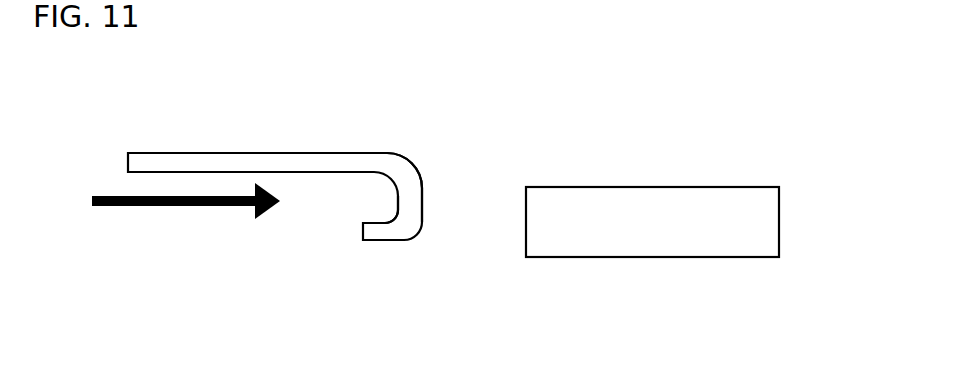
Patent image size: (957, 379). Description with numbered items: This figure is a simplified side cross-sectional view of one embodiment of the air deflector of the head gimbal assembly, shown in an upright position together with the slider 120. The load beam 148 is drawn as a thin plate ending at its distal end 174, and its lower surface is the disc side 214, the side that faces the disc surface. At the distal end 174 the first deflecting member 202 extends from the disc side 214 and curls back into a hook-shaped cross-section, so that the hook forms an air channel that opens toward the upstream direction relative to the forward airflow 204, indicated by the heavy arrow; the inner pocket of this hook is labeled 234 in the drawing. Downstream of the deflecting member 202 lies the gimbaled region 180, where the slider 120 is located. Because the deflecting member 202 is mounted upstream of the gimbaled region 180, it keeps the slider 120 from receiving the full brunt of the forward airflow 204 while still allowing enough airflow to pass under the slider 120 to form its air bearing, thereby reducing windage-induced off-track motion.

The load beam 148 is at (165, 152).
The distal end 174 is at (297, 152).
The first deflecting member 202 is at (422, 195).
The disc side 214 is at (300, 172).
The hook end 234 is at (355, 209).
The forward airflow 204 is at (130, 207).
The slider 120 is at (780, 220).
The gimbaled region 180 is at (592, 158).